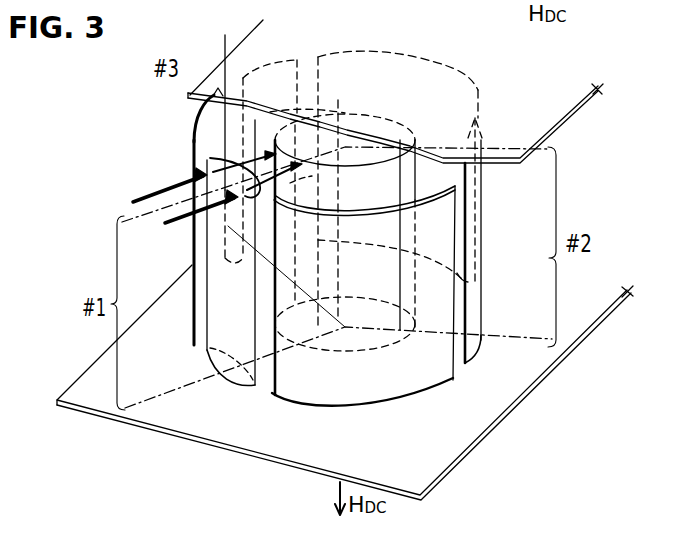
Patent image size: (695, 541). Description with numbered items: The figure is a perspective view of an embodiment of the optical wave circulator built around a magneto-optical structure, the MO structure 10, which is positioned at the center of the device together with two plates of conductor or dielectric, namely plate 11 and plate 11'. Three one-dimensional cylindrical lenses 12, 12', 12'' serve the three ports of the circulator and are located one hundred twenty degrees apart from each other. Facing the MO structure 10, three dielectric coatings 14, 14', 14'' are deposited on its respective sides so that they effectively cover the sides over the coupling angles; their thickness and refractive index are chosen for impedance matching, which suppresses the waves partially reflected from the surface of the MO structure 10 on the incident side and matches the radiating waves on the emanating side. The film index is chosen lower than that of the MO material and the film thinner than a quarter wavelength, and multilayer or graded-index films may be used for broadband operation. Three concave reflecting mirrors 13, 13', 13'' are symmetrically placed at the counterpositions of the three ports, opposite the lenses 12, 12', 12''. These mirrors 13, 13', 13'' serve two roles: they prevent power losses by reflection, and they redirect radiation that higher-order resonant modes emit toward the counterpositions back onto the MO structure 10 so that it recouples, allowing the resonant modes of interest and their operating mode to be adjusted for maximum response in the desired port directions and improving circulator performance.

The MO structure 10 is at (415, 142).
The plate of conductor or dielectric 11 is at (414, 91).
The plate of conductor or dielectric 11' is at (353, 382).
The cylindrical lens 12 is at (189, 306).
The cylindrical lens 12' is at (542, 251).
The cylindrical lens 12'' is at (279, 150).
The reflecting mirror 13 is at (398, 169).
The reflecting mirror 13' is at (162, 112).
The reflecting mirror 13'' is at (349, 340).
The dielectric coating 14 is at (239, 227).
The dielectric coating 14' is at (492, 164).
The dielectric coating 14'' is at (312, 164).